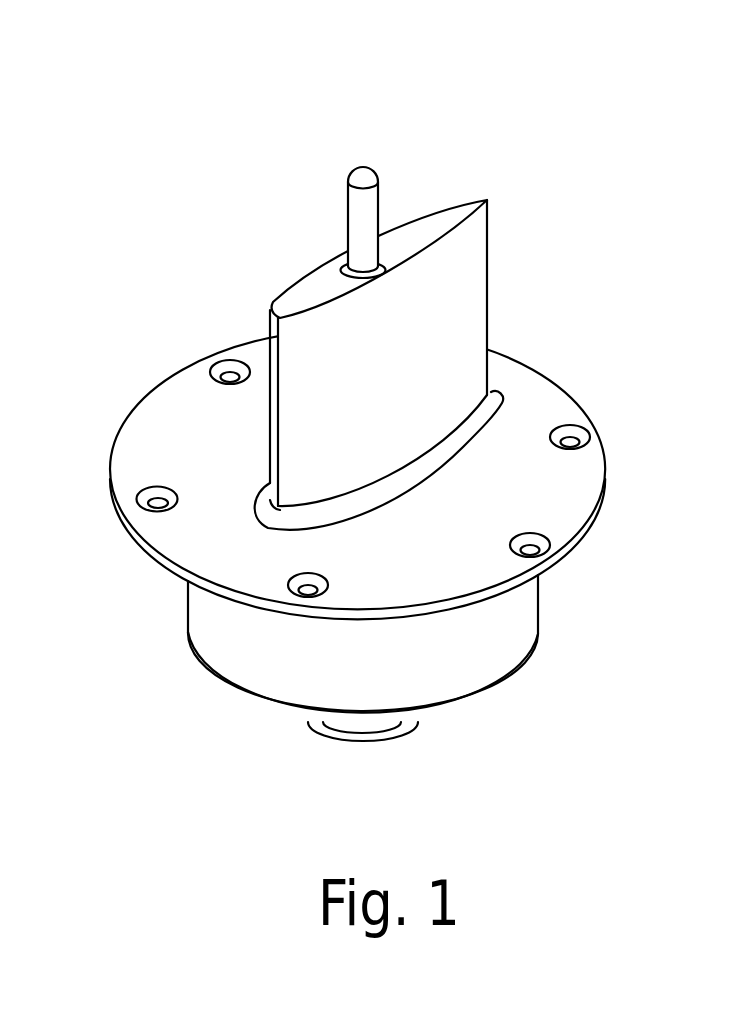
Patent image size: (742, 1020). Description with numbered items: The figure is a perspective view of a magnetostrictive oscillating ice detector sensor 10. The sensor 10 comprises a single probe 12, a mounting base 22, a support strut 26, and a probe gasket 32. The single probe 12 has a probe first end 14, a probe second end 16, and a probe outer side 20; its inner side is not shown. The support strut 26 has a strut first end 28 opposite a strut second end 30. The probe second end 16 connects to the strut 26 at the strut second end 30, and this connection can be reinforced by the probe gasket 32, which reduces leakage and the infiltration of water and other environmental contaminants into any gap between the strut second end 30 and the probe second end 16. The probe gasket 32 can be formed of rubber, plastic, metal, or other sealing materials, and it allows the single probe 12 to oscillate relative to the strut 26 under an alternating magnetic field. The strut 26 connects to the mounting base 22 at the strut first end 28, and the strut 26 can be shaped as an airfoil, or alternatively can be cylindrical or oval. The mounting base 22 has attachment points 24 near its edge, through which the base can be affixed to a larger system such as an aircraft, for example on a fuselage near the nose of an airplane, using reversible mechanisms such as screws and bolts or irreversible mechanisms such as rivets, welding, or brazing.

The magnetostrictive oscillating ice detector sensor 10 is at (637, 66).
The single probe 12 is at (347, 207).
The probe first end 14 is at (358, 173).
The probe second end 16 is at (345, 250).
The probe outer side 20 is at (388, 186).
The mounting base 22 is at (158, 413).
The attachment points 24 is at (540, 542).
The support strut 26 is at (488, 257).
The strut first end 28 is at (502, 388).
The strut second end 30 is at (487, 200).
The probe gasket 32 is at (340, 268).